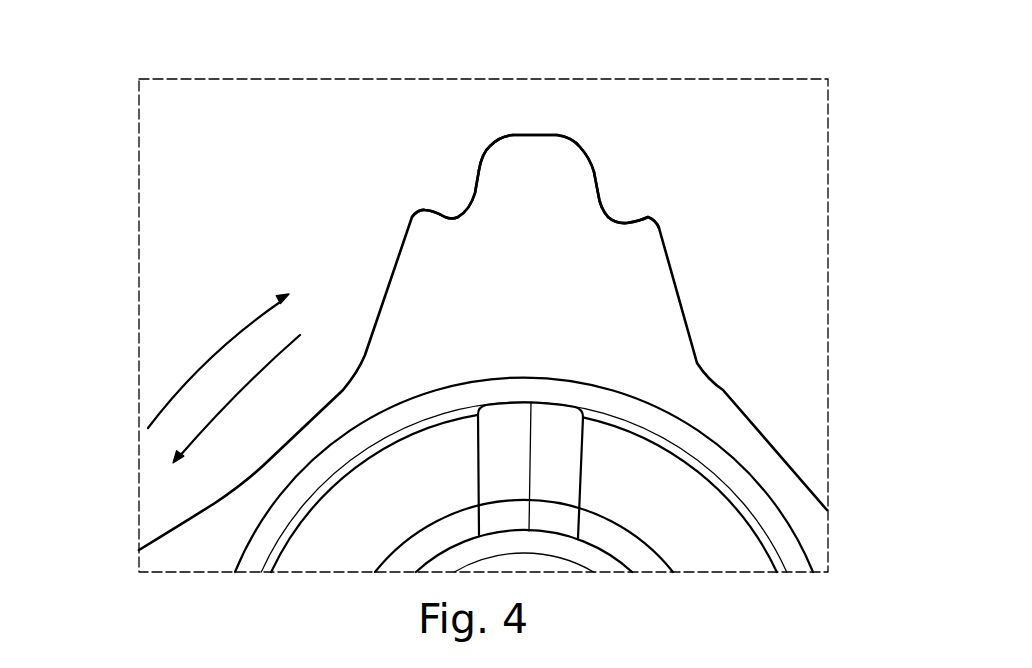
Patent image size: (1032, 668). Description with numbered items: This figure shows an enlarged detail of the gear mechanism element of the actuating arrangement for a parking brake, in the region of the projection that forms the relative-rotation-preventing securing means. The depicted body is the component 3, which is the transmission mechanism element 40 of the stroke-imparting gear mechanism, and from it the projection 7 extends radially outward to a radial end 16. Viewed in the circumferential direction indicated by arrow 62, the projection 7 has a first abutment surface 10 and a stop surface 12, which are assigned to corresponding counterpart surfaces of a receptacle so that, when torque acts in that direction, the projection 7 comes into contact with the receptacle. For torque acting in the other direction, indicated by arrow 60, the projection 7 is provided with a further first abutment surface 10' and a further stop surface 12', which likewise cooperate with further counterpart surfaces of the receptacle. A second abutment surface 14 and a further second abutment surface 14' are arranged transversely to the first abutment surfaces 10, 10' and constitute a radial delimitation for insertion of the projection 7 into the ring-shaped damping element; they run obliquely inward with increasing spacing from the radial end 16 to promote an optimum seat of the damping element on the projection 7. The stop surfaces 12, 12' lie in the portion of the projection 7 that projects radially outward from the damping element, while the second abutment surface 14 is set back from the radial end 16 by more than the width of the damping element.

The projection 7 is at (535, 168).
The further second abutment surface 14' is at (390, 121).
The further first abutment surface 10' is at (429, 120).
The further stop surface 12' is at (487, 97).
The radial end 16 is at (530, 133).
The stop surface 12 is at (604, 98).
The first abutment surface 10 is at (653, 120).
The second abutment surface 14 is at (705, 126).
The arrow 60 is at (200, 363).
The arrow 62 is at (186, 446).
The component 3 is at (700, 503).
The transmission mechanism element 40 is at (700, 503).